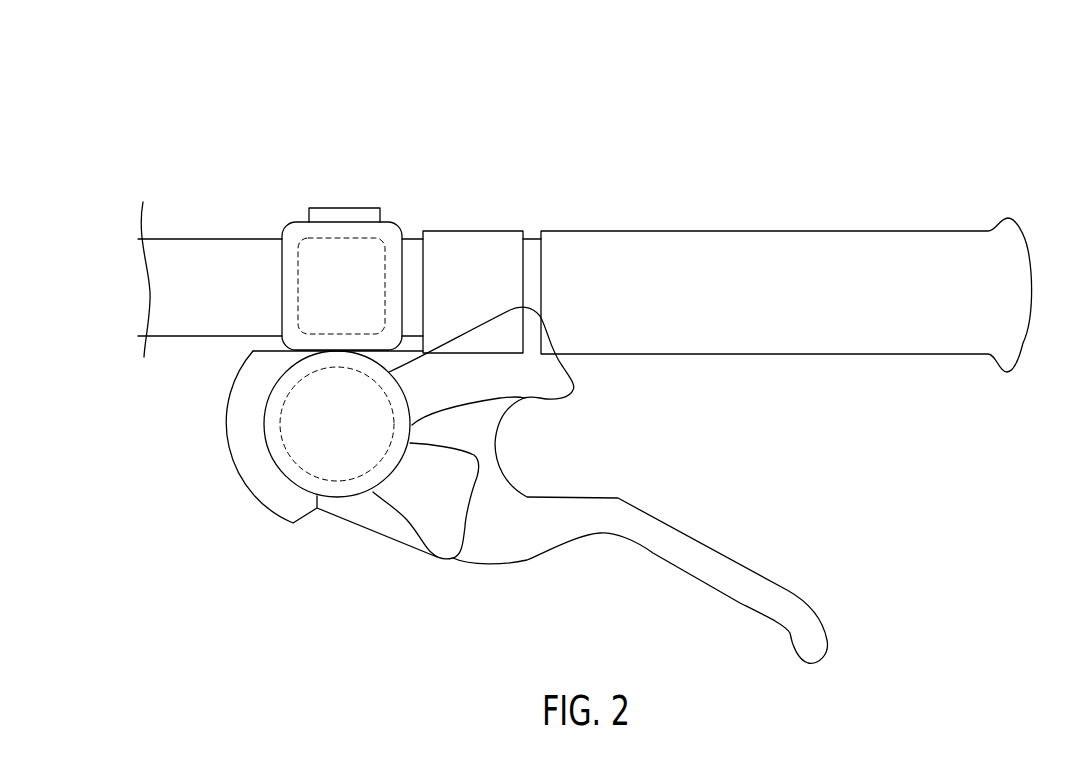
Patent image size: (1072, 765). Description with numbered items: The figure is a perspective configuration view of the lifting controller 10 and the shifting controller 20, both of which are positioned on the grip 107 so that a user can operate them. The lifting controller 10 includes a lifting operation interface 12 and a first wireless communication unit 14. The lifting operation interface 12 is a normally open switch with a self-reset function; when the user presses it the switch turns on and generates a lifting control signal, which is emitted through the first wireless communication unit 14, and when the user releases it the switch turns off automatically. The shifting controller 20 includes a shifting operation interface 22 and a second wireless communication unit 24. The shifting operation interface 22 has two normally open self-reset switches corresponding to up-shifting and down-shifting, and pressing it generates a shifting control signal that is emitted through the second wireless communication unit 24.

The lifting controller 10 is at (282, 268).
The lifting operation interface 12 is at (338, 208).
The first wireless communication unit 14 is at (363, 268).
The grip 107 is at (802, 272).
The shifting controller 20 is at (343, 497).
The shifting operation interface 22 is at (507, 370).
The second wireless communication unit 24 is at (312, 432).